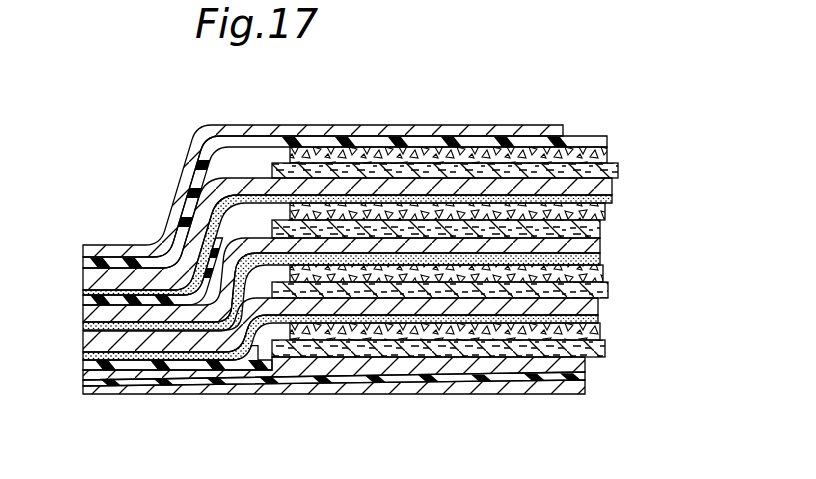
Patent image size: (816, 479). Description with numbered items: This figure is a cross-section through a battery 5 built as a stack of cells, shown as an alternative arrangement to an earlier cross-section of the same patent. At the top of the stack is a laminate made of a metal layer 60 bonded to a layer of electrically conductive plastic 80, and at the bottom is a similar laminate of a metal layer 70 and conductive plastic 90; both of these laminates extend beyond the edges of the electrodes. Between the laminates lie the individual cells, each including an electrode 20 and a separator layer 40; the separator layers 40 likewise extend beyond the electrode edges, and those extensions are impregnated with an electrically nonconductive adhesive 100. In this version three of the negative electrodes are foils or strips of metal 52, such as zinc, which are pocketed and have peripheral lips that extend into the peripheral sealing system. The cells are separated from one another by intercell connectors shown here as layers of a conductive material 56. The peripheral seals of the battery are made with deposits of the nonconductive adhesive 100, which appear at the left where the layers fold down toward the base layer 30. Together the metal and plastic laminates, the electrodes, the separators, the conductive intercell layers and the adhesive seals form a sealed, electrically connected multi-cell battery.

The laminated battery assembly 5 is at (277, 122).
The metal layer 60 is at (549, 126).
The layer of electrically conductive plastic 80 is at (590, 139).
The electrode layer 20 is at (606, 157).
The separator layer 40 is at (608, 176).
The foil or strip of metal 52 is at (612, 193).
The layer of conductive material 56 is at (613, 203).
The base layer 30 is at (585, 366).
The conductive plastic 90 is at (587, 378).
The metal layer 70 is at (587, 390).
The electrically nonconductive adhesive 100 is at (83, 270).